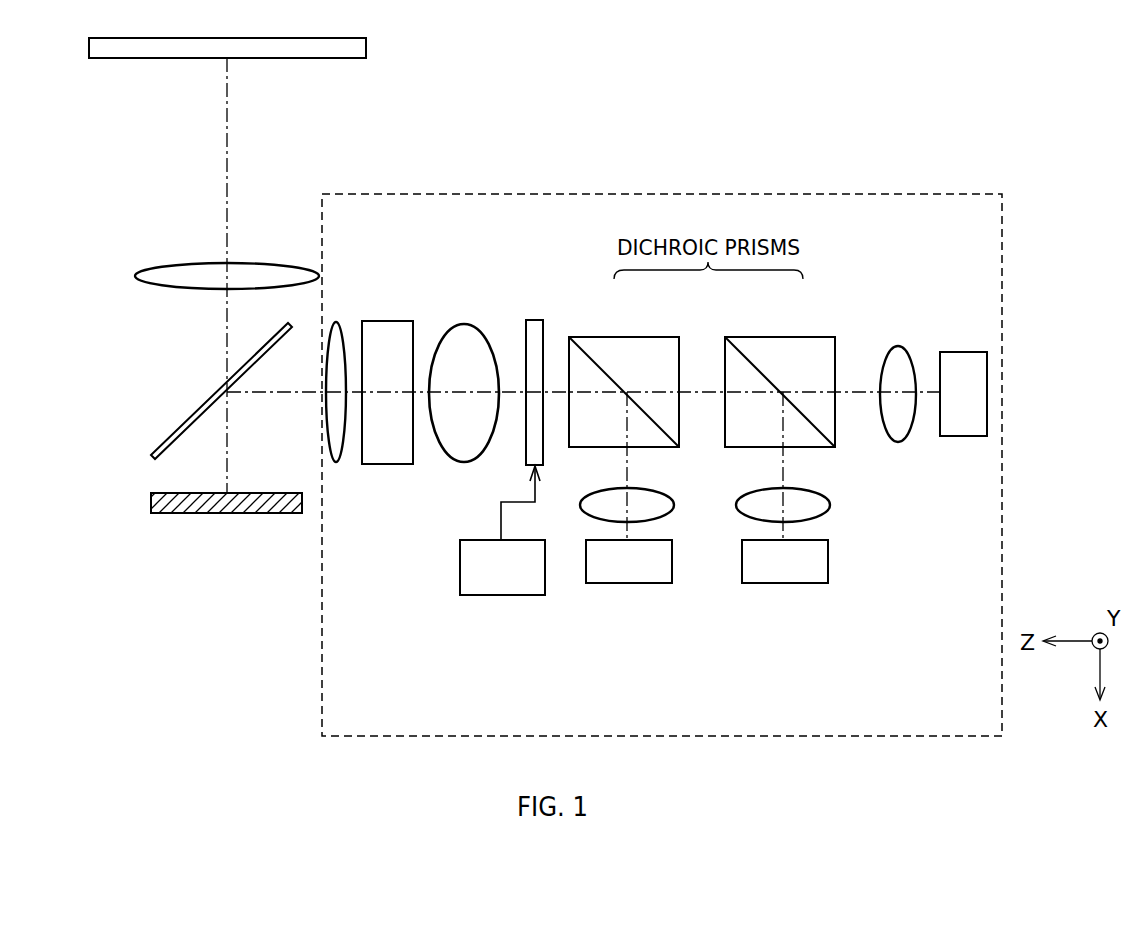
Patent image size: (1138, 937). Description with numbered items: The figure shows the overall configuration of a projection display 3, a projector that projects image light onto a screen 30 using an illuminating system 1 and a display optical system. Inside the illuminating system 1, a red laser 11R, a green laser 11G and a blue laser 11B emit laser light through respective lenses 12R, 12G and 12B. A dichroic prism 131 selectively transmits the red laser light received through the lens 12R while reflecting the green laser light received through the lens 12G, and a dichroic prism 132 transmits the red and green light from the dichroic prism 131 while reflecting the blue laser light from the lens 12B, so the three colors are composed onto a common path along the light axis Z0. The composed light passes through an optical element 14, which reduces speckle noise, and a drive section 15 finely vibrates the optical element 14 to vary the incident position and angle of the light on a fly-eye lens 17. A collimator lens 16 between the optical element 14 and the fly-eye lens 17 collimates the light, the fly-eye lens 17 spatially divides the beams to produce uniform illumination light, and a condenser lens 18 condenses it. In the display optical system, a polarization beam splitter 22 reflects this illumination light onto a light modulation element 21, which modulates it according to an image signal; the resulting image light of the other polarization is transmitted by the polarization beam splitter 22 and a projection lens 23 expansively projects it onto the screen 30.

The illuminating system 1 is at (604, 193).
The projection display 3 is at (954, 123).
The screen 30 is at (367, 46).
The projection lens 23 is at (157, 266).
The polarization beam splitter 22 is at (179, 426).
The light modulation element 21 is at (201, 515).
The condenser lens 18 is at (338, 463).
The fly-eye lens 17 is at (393, 320).
The collimator lens 16 is at (460, 465).
The optical element 14 is at (535, 320).
The light axis Z0 is at (553, 391).
The drive section 15 is at (502, 597).
The dichroic prism 132 is at (629, 336).
The dichroic prism 131 is at (781, 336).
The lens 12R is at (892, 346).
The red laser 11R is at (963, 438).
The lens 12B is at (672, 495).
The lens 12G is at (828, 495).
The blue laser 11B is at (628, 585).
The green laser 11G is at (785, 585).